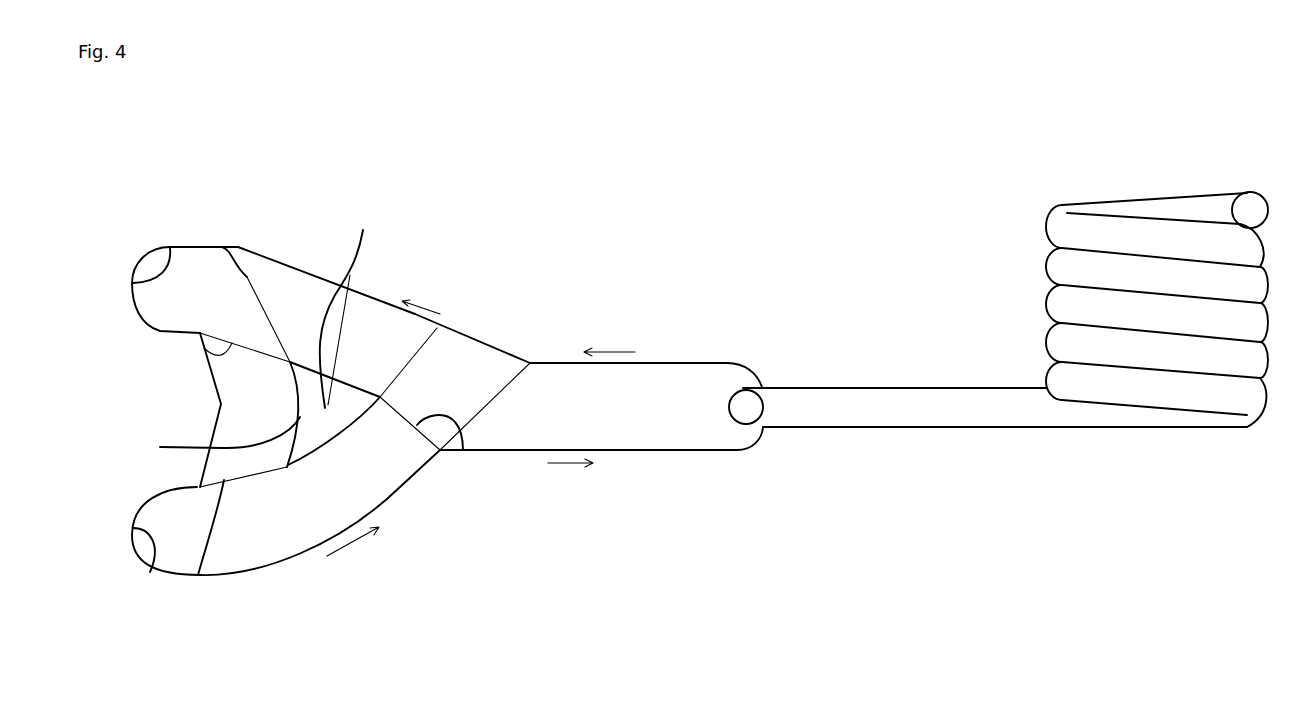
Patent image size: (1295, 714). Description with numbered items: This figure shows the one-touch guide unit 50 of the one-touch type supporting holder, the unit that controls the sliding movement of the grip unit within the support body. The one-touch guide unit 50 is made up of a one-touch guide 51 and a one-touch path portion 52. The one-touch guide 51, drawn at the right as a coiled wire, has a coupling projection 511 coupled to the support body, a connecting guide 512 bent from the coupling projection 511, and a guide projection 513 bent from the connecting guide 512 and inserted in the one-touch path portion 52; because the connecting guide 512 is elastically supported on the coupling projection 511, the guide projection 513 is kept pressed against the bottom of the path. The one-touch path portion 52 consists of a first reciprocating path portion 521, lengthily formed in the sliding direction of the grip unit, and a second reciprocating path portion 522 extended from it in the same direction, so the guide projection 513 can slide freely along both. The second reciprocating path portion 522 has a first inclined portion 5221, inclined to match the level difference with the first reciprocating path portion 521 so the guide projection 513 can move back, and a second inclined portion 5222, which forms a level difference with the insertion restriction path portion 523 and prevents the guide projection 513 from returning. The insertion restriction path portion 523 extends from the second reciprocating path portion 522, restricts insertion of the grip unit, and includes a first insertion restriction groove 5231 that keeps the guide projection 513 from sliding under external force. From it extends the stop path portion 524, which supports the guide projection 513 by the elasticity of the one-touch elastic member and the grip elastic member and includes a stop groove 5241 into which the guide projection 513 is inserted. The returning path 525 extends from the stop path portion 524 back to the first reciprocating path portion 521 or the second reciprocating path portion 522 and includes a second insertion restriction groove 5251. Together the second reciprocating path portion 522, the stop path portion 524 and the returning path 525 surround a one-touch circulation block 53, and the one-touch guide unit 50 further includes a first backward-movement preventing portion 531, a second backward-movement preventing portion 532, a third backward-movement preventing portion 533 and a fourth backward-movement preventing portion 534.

The one-touch guide unit 50 is at (622, 242).
The one-touch guide 51 is at (1000, 157).
The coupling projection 511 is at (1064, 225).
The connecting guide 512 is at (953, 403).
The guide projection 513 is at (753, 403).
The one-touch path portion 52 is at (724, 353).
The first reciprocating path portion 521 is at (653, 428).
The second reciprocating path portion 522 is at (383, 331).
The first inclined portion 5221 is at (460, 368).
The second inclined portion 5222 is at (283, 283).
The insertion restriction path portion 523 is at (198, 291).
The first insertion restriction groove 5231 is at (170, 247).
The stop path portion 524 is at (242, 412).
The stop groove 5241 is at (160, 447).
The returning path 525 is at (272, 521).
The second insertion restriction groove 5251 is at (152, 565).
The one-touch circulation block 53 is at (363, 230).
The first backward-movement preventing portion 531 is at (223, 247).
The second backward-movement preventing portion 532 is at (200, 335).
The third backward-movement preventing portion 533 is at (200, 577).
The fourth backward-movement preventing portion 534 is at (463, 450).